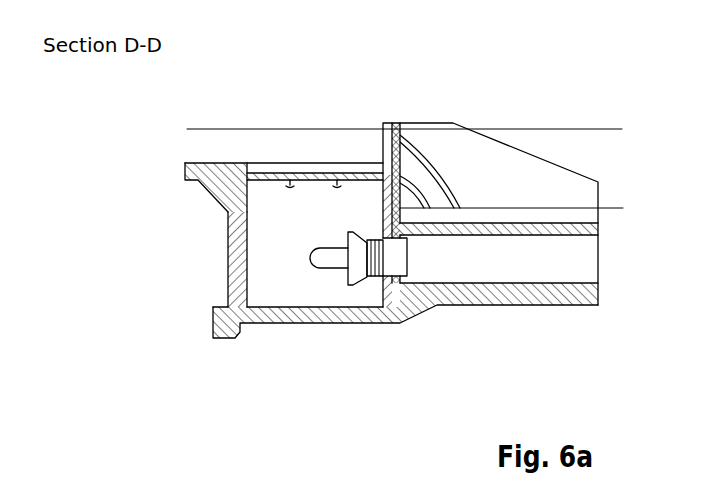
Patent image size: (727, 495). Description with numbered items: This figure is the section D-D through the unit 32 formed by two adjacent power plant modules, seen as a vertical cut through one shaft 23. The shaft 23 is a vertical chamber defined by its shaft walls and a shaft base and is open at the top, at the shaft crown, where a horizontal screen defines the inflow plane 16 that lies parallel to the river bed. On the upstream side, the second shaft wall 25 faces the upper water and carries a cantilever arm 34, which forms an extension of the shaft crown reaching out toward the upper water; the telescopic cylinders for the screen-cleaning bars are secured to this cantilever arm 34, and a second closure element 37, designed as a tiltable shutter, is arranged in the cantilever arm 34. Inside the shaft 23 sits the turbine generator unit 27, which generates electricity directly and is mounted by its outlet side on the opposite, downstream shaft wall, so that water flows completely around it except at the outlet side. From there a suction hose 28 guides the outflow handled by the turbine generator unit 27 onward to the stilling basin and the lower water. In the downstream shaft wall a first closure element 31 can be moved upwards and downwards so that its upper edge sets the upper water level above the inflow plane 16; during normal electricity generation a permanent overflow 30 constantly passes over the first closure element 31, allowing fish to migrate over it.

The unit 32 is at (118, 172).
The second closure element 37 is at (222, 176).
The inflow plane 16 is at (355, 172).
The first closure element 31 is at (398, 152).
The permanent overflow 30 is at (453, 167).
The suction hose 28 is at (588, 260).
The cantilever arm 34 is at (226, 212).
The second shaft wall 25 is at (228, 284).
The shaft 23 is at (288, 297).
The turbine generator unit 27 is at (358, 280).